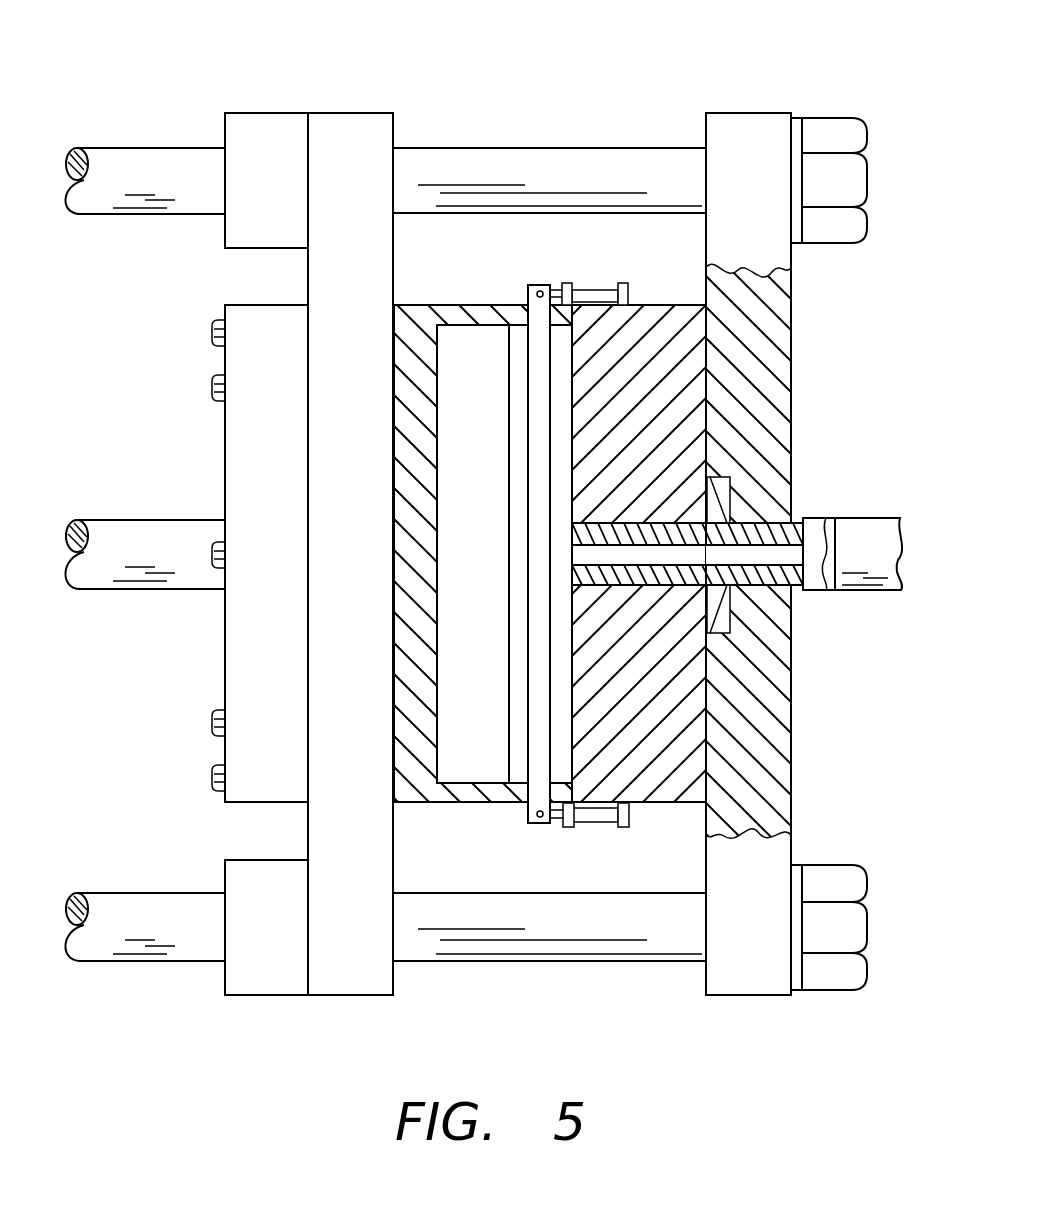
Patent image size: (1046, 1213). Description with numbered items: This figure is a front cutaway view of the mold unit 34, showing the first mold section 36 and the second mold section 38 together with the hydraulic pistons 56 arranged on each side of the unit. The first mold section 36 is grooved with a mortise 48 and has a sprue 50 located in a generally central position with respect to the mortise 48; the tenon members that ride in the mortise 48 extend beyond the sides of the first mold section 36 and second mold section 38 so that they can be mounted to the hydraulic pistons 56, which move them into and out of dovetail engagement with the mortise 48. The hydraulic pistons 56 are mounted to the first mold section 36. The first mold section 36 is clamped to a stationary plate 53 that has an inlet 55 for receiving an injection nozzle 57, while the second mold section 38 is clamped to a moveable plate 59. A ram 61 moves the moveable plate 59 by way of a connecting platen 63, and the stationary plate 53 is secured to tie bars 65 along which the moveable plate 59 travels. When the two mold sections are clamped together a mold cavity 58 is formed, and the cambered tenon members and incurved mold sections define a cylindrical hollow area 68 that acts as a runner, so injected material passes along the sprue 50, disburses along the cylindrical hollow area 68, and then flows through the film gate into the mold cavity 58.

The mold unit 34 is at (519, 45).
The first mold section 36 is at (646, 300).
The second mold section 38 is at (437, 300).
The mortise 48 is at (570, 378).
The sprue 50 is at (675, 553).
The stationary plate 53 is at (740, 138).
The inlet 55 is at (725, 523).
The hydraulic pistons 56 is at (600, 290).
The injection nozzle 57 is at (844, 602).
The mold cavity 58 is at (520, 370).
The moveable plate 59 is at (347, 140).
The ram 61 is at (385, 539).
The connecting platen 63 is at (243, 462).
The tie bars 65 is at (436, 165).
The cylindrical hollow area 68 is at (558, 322).